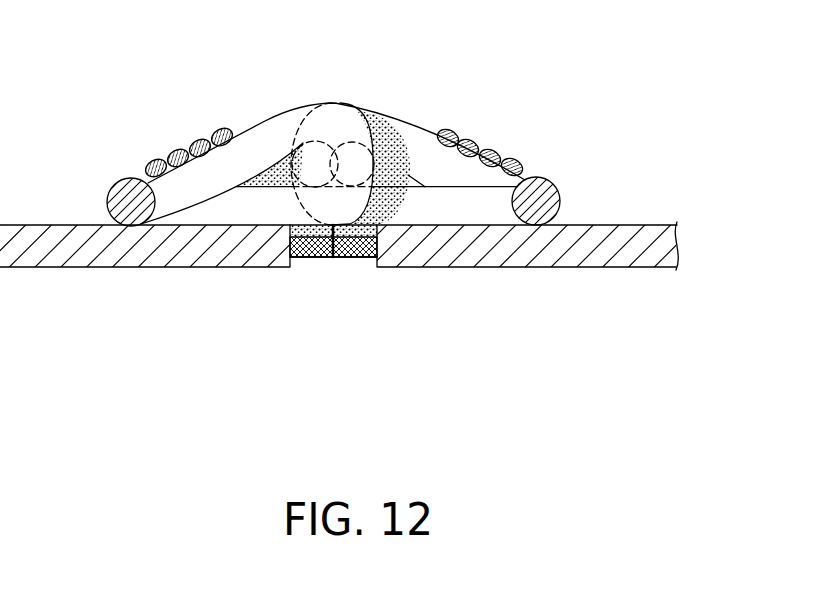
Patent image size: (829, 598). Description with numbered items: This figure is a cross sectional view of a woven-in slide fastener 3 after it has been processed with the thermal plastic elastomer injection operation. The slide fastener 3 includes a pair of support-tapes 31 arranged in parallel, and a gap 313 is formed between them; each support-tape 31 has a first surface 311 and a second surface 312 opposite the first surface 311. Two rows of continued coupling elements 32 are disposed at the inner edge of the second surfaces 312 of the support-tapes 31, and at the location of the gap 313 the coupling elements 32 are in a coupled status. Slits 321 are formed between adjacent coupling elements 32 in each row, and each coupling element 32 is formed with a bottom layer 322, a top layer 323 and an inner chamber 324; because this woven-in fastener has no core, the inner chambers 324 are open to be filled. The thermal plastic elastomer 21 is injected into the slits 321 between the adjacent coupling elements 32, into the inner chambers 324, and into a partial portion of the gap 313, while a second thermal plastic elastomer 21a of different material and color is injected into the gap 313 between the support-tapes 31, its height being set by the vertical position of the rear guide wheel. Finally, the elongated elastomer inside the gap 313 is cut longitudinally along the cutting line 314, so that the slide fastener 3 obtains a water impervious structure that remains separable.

The slide fastener 3 is at (578, 119).
The thermal plastic elastomer 21 is at (273, 162).
The second thermal plastic elastomer 21a is at (313, 257).
The support-tape 31 is at (650, 233).
The first surface 311 is at (590, 268).
The second surface 312 is at (610, 223).
The gap 313 is at (297, 262).
The cutting line 314 is at (340, 258).
The coupling element 32 is at (538, 178).
The slit 321 is at (420, 142).
The bottom layer 322 is at (208, 212).
The top layer 323 is at (247, 148).
The inner chamber 324 is at (253, 187).